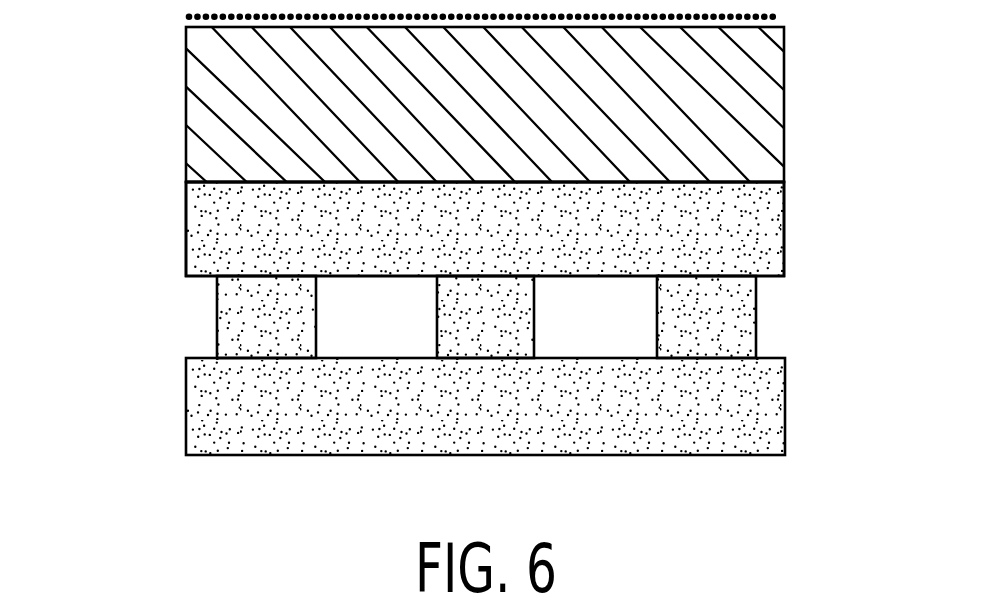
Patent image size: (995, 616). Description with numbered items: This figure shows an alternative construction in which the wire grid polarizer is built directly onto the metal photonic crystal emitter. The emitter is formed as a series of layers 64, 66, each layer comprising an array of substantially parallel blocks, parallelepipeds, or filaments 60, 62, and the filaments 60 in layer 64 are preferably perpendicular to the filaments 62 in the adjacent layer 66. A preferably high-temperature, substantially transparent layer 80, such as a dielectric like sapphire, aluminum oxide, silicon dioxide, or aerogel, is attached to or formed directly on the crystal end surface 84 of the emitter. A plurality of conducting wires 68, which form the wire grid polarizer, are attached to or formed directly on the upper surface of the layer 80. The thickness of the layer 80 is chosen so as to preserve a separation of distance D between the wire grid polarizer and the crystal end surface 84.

The filaments 60 is at (784, 237).
The filaments 62 is at (756, 318).
The layer 64 is at (127, 240).
The layer 66 is at (153, 322).
The conducting wires 68 is at (788, 16).
The substantially transparent layer 80 is at (784, 116).
The crystal end surface 84 is at (208, 180).